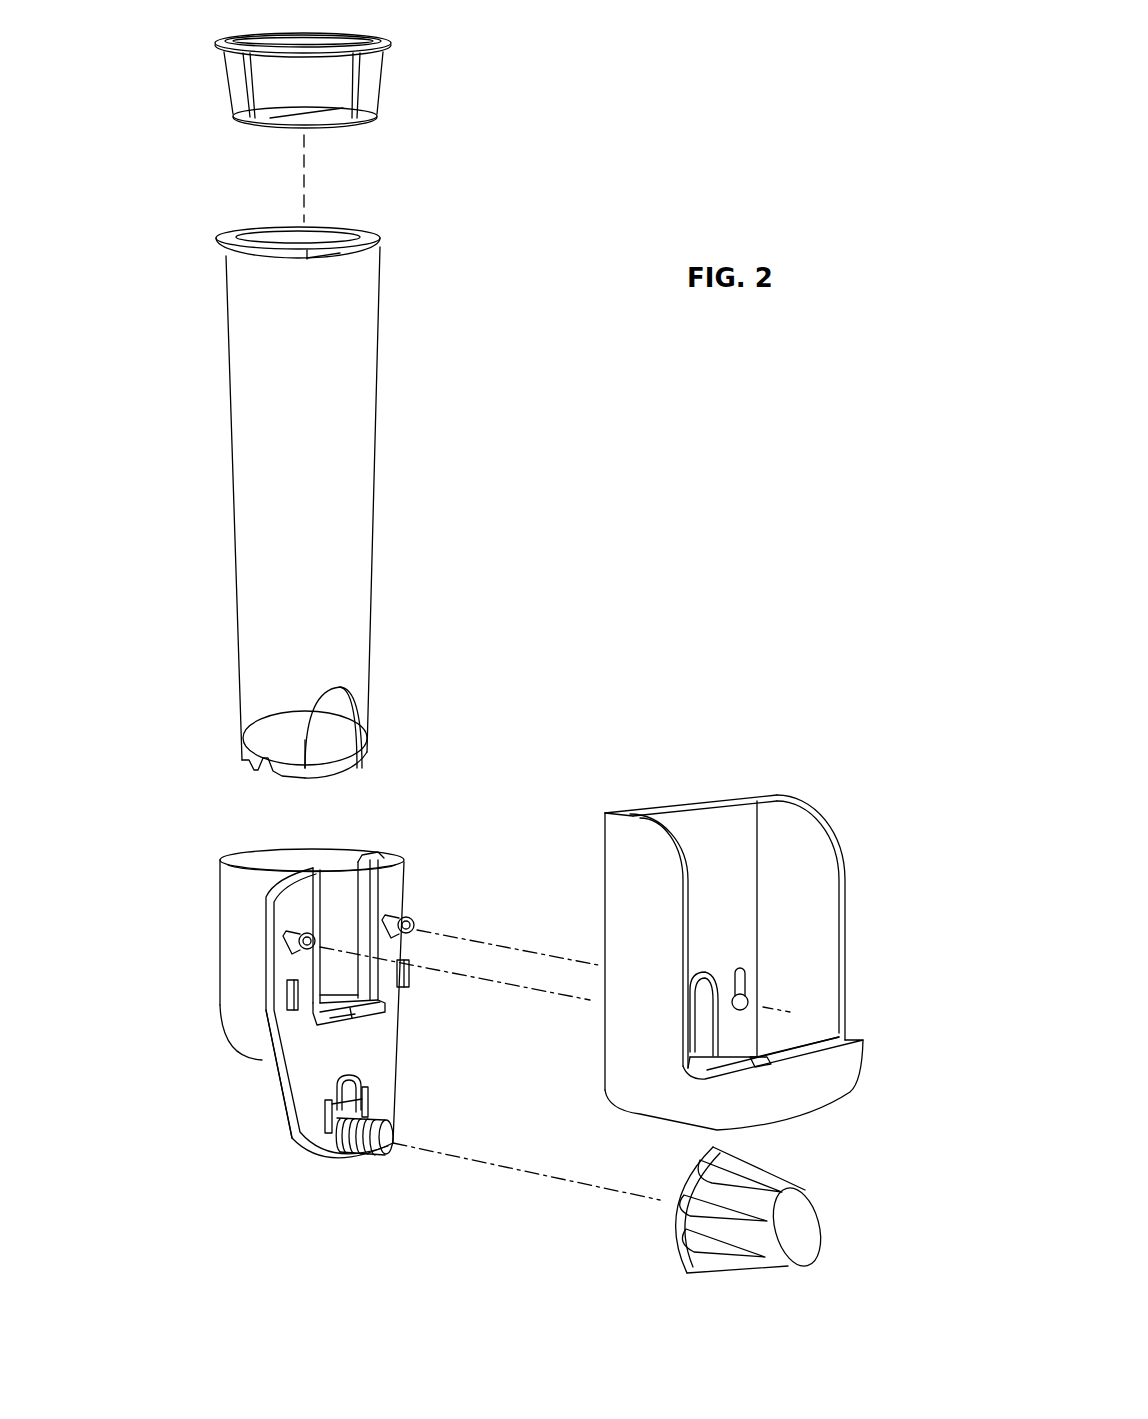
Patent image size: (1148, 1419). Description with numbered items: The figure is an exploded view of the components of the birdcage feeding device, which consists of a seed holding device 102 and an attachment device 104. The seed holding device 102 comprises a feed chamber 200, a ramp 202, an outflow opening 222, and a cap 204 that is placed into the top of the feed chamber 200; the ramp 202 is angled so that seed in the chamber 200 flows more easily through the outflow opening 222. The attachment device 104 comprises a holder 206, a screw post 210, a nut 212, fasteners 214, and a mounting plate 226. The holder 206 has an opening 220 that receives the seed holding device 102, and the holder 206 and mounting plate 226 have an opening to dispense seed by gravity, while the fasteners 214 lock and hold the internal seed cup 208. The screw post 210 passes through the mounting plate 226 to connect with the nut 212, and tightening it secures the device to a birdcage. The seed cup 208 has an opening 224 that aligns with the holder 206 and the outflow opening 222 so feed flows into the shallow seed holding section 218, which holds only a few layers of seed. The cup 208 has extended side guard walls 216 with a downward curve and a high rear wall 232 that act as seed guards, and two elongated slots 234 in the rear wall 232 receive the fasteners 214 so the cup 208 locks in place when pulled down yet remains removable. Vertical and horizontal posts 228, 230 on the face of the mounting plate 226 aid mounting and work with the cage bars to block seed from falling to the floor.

The seed holding device 102 is at (423, 287).
The attachment device 104 is at (203, 875).
The feed chamber 200 is at (357, 443).
The ramp 202 is at (330, 750).
The cap 204 is at (343, 33).
The holder 206 is at (240, 1027).
The seed cup 208 is at (855, 883).
The screw post 210 is at (377, 1143).
The nut 212 is at (797, 1230).
The fasteners 214 is at (287, 937).
The extended side guard walls 216 is at (635, 887).
The seed holding section 218 is at (762, 1065).
The opening 220 is at (275, 860).
The outflow opening 222 is at (357, 693).
The opening 224 is at (697, 1032).
The mounting plate 226 is at (308, 1133).
The vertical posts 228 is at (292, 1000).
The horizontal posts 230 is at (362, 1023).
The rear wall 232 is at (707, 828).
The elongated slots 234 is at (747, 998).